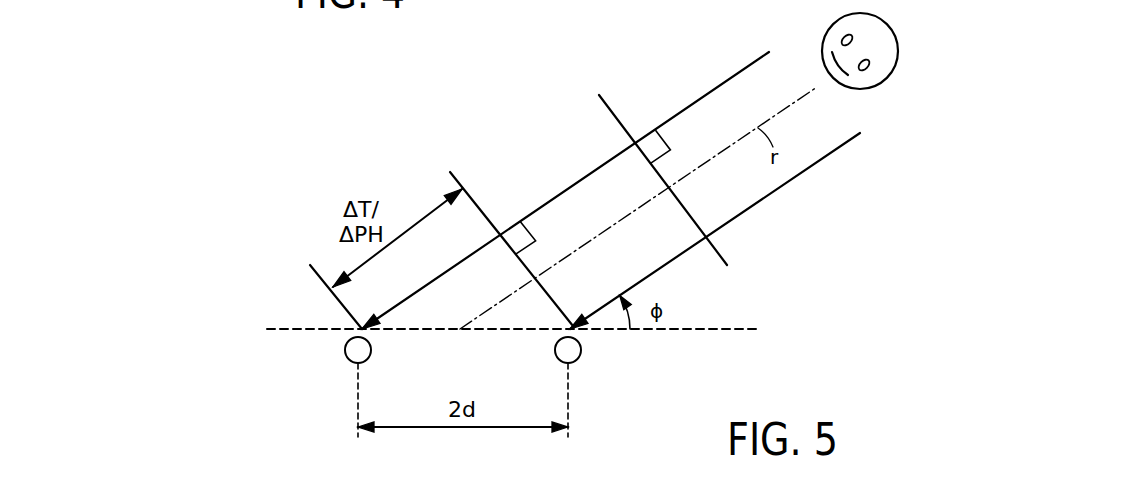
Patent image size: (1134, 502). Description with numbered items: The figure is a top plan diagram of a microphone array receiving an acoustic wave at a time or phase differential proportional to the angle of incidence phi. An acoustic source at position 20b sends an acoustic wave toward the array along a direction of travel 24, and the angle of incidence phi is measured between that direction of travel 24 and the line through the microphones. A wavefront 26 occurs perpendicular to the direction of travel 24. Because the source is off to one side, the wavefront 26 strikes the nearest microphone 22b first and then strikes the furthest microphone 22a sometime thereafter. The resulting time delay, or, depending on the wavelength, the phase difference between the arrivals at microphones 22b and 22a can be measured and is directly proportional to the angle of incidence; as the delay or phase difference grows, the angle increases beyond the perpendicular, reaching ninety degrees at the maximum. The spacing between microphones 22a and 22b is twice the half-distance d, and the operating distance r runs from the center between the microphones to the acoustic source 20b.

The acoustic source position 20b is at (887, 23).
The furthest microphone 22a is at (368, 360).
The nearest microphone 22b is at (578, 360).
The direction of travel 24 is at (737, 75).
The wavefront 26 is at (452, 172).